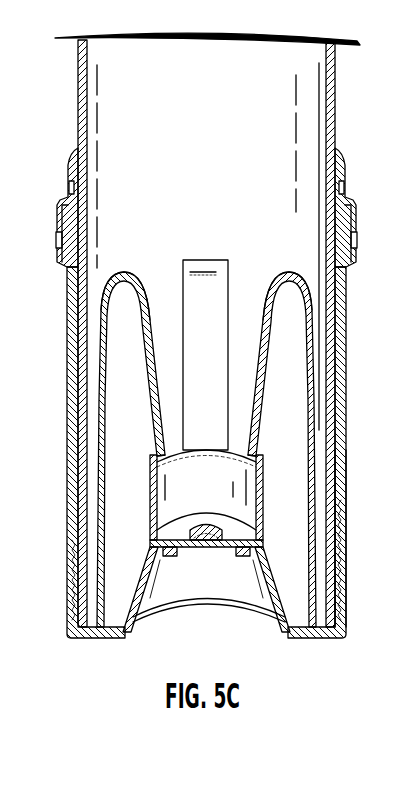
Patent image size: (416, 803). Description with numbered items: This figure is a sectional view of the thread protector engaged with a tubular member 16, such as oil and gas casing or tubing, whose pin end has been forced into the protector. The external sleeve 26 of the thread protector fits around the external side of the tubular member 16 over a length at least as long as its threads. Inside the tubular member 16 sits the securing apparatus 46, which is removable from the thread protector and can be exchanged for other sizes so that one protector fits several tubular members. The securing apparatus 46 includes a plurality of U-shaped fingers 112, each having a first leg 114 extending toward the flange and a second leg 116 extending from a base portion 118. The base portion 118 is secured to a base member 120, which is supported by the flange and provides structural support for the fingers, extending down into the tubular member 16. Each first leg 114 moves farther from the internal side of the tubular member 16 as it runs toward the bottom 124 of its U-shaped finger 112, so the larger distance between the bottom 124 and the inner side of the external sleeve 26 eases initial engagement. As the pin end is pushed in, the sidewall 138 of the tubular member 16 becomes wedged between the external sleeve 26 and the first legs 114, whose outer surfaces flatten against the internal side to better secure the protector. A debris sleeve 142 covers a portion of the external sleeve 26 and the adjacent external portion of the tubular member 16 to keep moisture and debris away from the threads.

The tubular member 16 is at (336, 100).
The external sleeve 26 is at (343, 448).
The securing apparatus 46 is at (223, 144).
The U-shaped finger 112 is at (182, 267).
The first leg 114 is at (97, 383).
The second leg 116 is at (255, 395).
The base portion 118 is at (157, 498).
The base member 120 is at (143, 585).
The bottom 124 is at (130, 270).
The sidewall 138 is at (334, 447).
The debris sleeve 142 is at (352, 212).